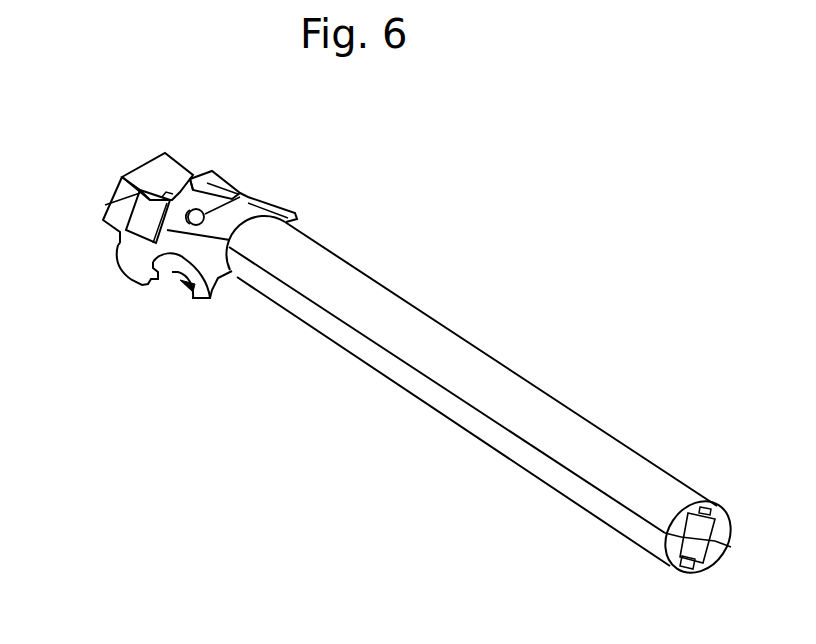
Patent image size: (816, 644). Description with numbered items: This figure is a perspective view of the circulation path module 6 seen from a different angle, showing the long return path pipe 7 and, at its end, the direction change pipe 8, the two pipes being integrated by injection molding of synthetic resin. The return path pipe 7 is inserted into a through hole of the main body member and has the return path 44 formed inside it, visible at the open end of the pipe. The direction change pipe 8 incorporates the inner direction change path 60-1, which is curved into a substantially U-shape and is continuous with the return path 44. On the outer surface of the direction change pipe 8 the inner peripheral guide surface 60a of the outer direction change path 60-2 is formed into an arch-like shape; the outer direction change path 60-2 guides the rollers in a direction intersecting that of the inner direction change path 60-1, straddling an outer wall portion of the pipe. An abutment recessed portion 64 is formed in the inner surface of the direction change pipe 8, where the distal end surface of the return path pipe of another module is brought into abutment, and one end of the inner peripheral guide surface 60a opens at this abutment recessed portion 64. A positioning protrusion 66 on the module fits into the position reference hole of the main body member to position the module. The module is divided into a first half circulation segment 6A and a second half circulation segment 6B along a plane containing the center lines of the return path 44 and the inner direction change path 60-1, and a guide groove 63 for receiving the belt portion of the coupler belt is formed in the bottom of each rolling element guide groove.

The circulation path module 6 is at (276, 355).
The first half circulation segment 6A is at (373, 312).
The second half circulation segment 6B is at (387, 358).
The return path pipe 7 is at (488, 430).
The direction change pipe 8 is at (108, 200).
The inner direction change path 60-1 is at (143, 222).
The inner peripheral guide surface 60a is at (193, 178).
The outer direction change path 60-2 is at (158, 283).
The guide groove 63 is at (712, 503).
The abutment recessed portion 64 is at (180, 273).
The positioning protrusion 66 is at (202, 215).
The return path 44 is at (697, 543).